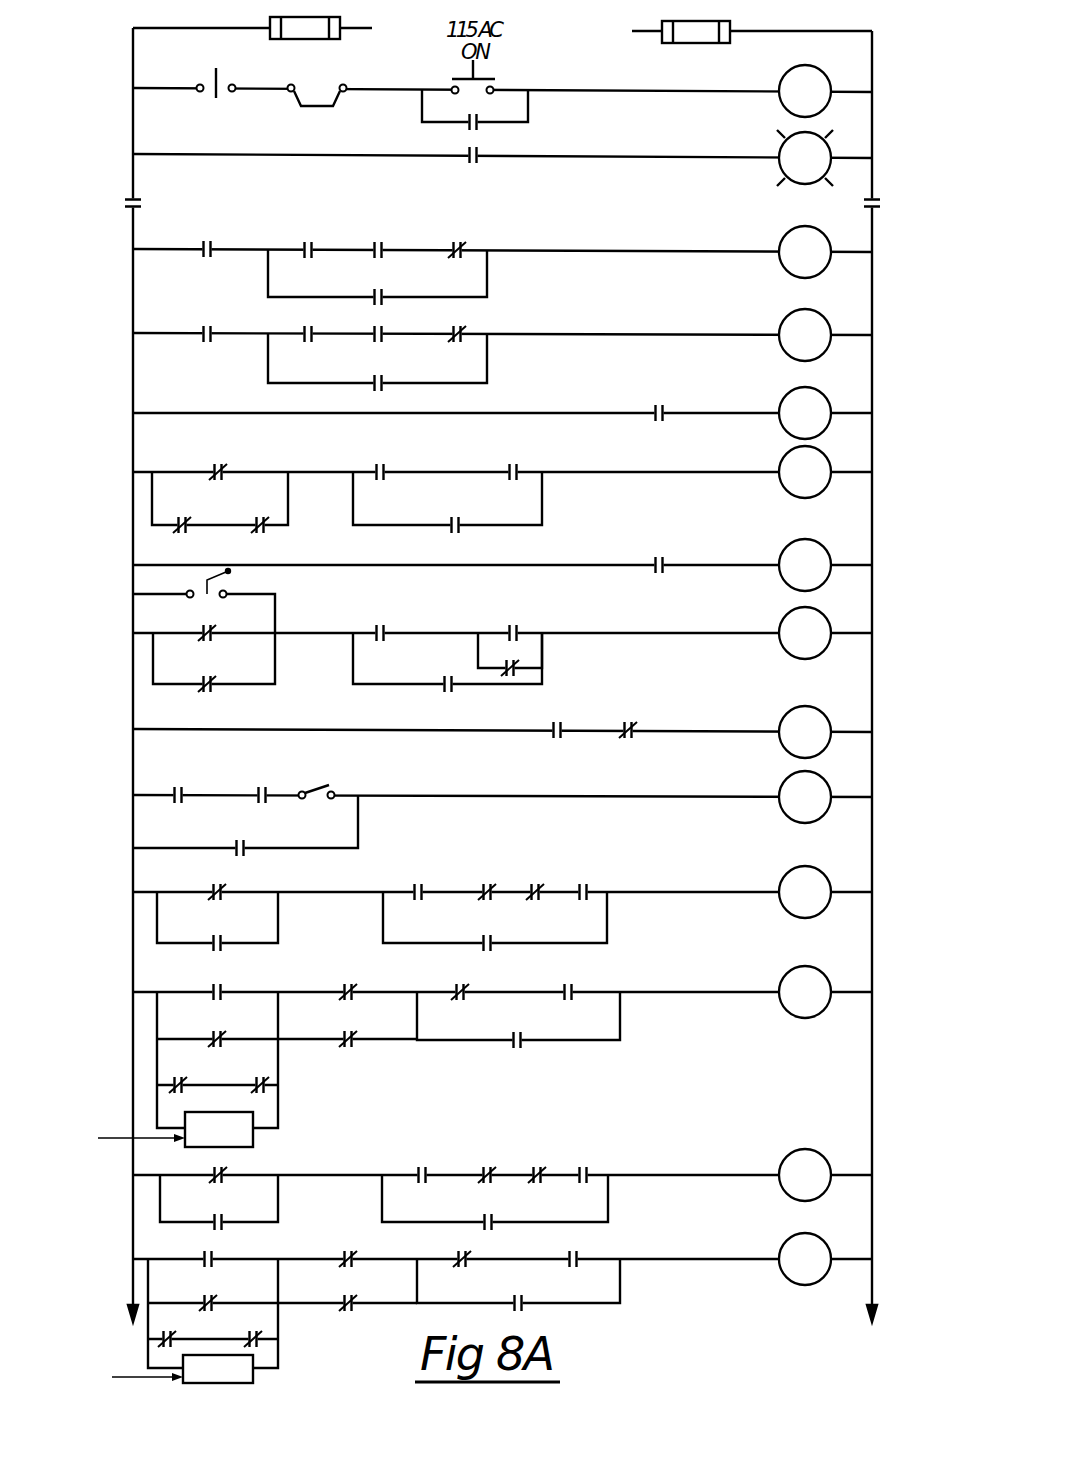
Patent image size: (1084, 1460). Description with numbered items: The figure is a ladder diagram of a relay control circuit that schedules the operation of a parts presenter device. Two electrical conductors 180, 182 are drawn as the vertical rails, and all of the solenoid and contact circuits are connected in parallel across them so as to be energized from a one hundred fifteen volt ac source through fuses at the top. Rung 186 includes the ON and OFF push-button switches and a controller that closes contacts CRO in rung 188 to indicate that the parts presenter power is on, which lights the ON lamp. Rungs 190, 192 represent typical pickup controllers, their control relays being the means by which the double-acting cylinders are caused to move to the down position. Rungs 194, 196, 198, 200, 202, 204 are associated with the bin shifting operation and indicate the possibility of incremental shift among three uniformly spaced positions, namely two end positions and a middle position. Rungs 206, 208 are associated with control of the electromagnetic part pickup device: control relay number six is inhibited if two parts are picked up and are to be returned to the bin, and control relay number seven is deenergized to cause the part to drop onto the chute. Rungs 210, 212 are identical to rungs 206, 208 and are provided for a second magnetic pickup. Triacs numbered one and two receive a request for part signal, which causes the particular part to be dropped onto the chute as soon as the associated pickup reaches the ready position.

The electrical conductor 180 is at (133, 60).
The electrical conductor 182 is at (872, 62).
The ladder diagram rung 186 is at (732, 74).
The ladder diagram rung 188 is at (732, 140).
The ladder diagram rung 190 is at (700, 230).
The ladder diagram rung 192 is at (718, 312).
The ladder diagram rung 194 is at (620, 386).
The ladder diagram rung 196 is at (735, 452).
The ladder diagram rung 198 is at (620, 541).
The ladder diagram rung 200 is at (710, 612).
The ladder diagram rung 202 is at (428, 712).
The ladder diagram rung 204 is at (540, 776).
The ladder diagram rung 206 is at (690, 864).
The ladder diagram rung 208 is at (710, 966).
The ladder diagram rung 210 is at (720, 1148).
The ladder diagram rung 212 is at (716, 1236).